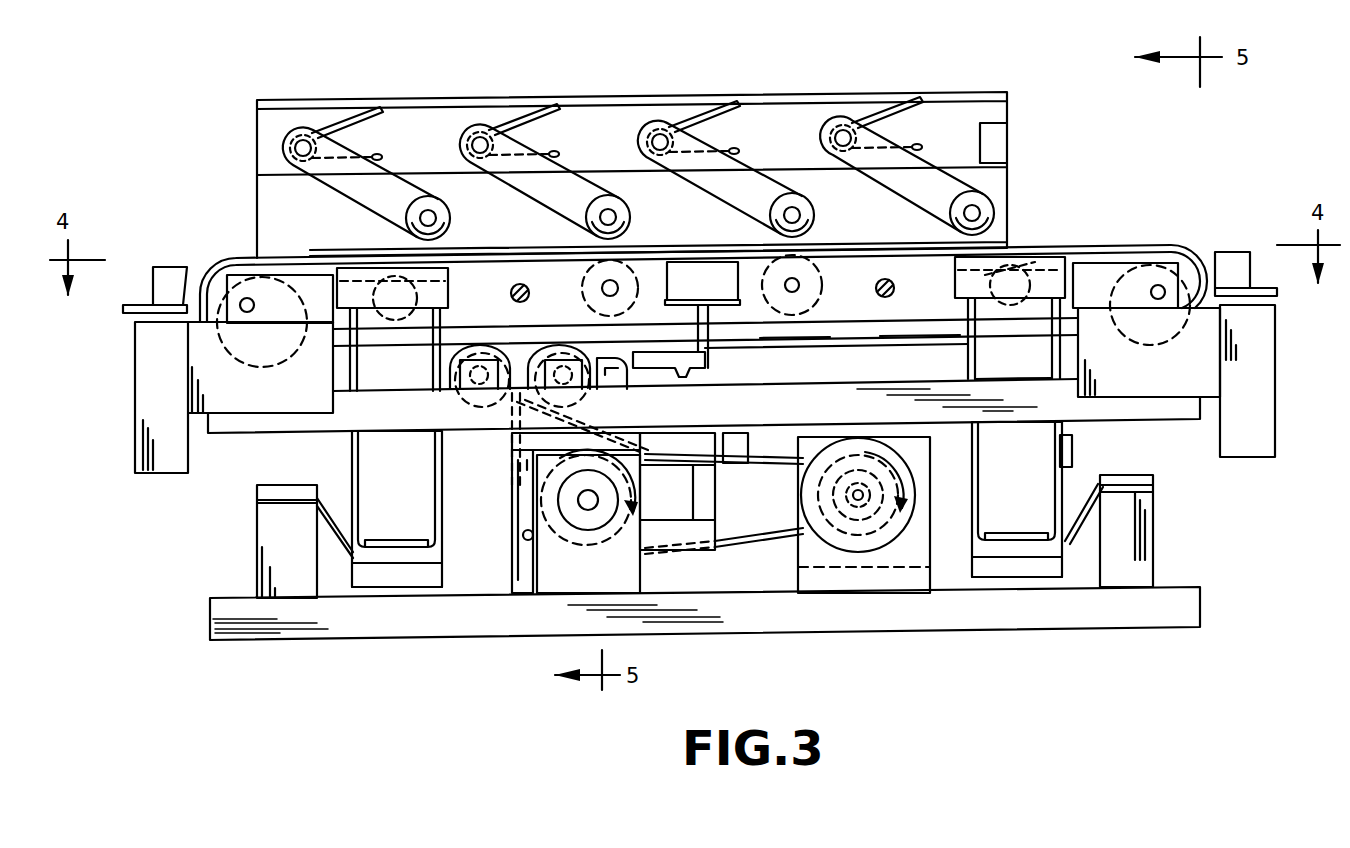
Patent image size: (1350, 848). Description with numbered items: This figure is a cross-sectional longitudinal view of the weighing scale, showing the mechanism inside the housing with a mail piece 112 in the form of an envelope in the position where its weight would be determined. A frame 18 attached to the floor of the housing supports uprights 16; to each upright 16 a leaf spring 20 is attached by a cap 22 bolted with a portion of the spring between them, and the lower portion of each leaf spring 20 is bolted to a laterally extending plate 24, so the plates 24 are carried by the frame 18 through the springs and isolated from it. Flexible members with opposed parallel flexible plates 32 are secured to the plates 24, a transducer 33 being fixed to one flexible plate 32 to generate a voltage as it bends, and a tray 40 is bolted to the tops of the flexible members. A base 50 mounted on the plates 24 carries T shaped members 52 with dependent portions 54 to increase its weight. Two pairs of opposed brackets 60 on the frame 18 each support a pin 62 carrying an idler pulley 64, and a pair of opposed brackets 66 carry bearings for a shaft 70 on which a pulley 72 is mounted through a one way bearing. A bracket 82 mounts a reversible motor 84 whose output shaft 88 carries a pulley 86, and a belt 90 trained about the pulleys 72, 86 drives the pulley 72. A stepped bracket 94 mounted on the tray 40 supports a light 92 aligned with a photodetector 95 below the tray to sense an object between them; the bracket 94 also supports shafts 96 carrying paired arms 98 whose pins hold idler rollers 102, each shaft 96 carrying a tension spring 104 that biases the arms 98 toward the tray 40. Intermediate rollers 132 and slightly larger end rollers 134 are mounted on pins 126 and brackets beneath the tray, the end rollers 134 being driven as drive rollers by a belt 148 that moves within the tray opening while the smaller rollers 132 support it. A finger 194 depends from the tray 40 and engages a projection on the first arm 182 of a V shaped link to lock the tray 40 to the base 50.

The upright 16 is at (1160, 575).
The frame 18 is at (1202, 598).
The leaf spring 20 is at (1080, 527).
The cap 22 is at (1135, 475).
The laterally extending plate 24 is at (1030, 577).
The flexible plate 32 is at (1000, 480).
The transducer 33 is at (1072, 455).
The tray 40 is at (1070, 290).
The base 50 is at (1035, 378).
The T shaped member 52 is at (1275, 365).
The dependent portion 54 is at (1250, 458).
The bracket 60 is at (450, 392).
The pin 62 is at (583, 398).
The idler pulley 64 is at (622, 385).
The bracket 66 is at (643, 578).
The shaft 70 is at (577, 492).
The pulley 72 is at (520, 568).
The bracket 82 is at (933, 640).
The reversible motor 84 is at (862, 552).
The pulley 86 is at (800, 505).
The output shaft 88 is at (830, 481).
The belt 90 is at (770, 540).
The light 92 is at (1003, 148).
The stepped bracket 94 is at (965, 88).
The photodetector 95 is at (1035, 254).
The shaft 96 is at (833, 126).
The paired arm 98 is at (955, 170).
The idler roller 102 is at (1005, 232).
The tension spring 104 is at (875, 105).
The mail piece 112 is at (1135, 245).
The pin 126 is at (590, 282).
The intermediate roller 132 is at (830, 340).
The end roller 134 is at (303, 297).
The belt 148 is at (942, 345).
The first arm 182 is at (704, 406).
The finger 194 is at (714, 332).